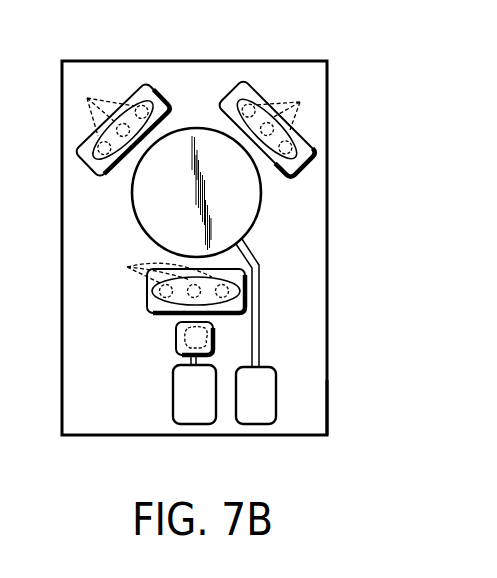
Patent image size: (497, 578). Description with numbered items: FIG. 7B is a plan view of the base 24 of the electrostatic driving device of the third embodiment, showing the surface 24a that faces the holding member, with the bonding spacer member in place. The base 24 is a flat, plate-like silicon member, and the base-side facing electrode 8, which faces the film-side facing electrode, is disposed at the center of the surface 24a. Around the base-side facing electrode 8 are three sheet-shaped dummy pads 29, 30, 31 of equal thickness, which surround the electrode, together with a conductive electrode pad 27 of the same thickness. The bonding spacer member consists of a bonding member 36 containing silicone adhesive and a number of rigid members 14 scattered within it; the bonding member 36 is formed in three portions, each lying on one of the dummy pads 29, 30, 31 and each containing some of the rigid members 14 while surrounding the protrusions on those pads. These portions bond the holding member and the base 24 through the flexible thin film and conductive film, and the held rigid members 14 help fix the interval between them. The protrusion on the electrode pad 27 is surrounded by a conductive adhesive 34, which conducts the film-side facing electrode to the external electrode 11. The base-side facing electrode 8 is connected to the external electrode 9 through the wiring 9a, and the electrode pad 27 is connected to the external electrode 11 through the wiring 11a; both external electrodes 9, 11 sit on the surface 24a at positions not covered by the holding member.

The base 24 is at (157, 61).
The surface 24a is at (315, 412).
The base-side facing electrode 8 is at (245, 210).
The dummy pad 30 is at (95, 177).
The dummy pad 31 is at (303, 143).
The dummy pad 29 is at (155, 315).
The bonding member 36 is at (81, 149).
The rigid members 14 is at (192, 176).
The electrode pad 27 is at (177, 333).
The conductive adhesive 34 is at (213, 334).
The wiring 11a is at (189, 357).
The external electrode 11 is at (190, 410).
The external electrode 9 is at (258, 408).
The wiring 9a is at (260, 345).